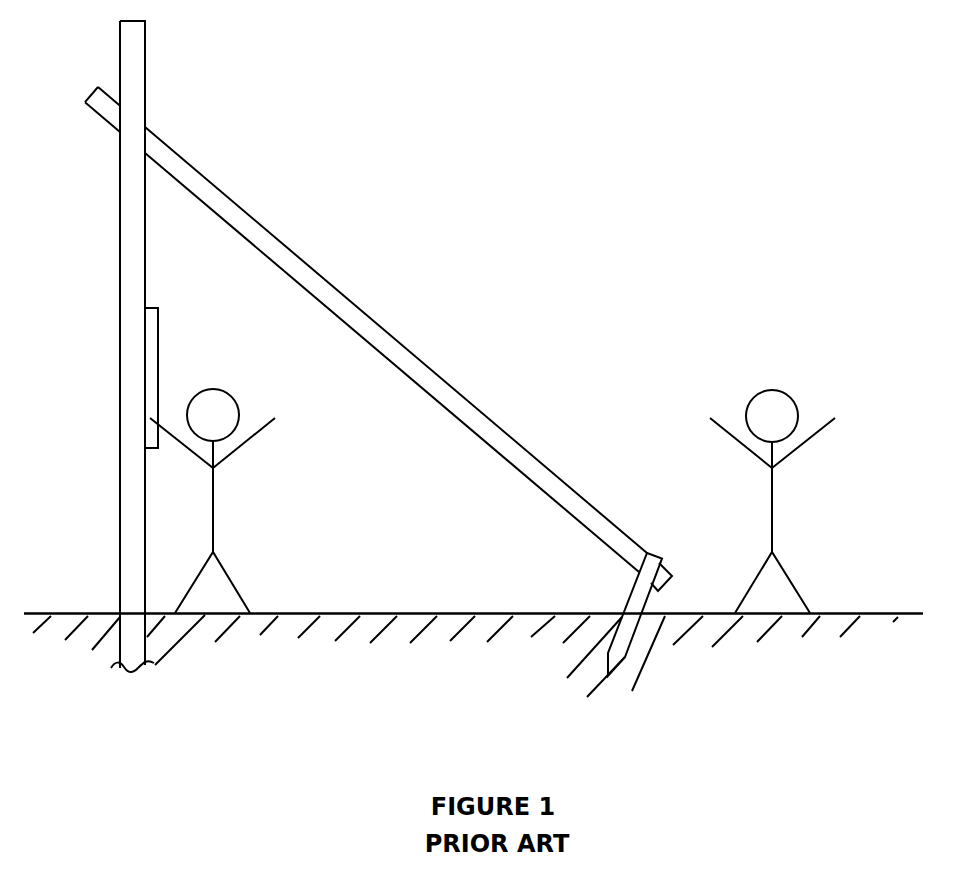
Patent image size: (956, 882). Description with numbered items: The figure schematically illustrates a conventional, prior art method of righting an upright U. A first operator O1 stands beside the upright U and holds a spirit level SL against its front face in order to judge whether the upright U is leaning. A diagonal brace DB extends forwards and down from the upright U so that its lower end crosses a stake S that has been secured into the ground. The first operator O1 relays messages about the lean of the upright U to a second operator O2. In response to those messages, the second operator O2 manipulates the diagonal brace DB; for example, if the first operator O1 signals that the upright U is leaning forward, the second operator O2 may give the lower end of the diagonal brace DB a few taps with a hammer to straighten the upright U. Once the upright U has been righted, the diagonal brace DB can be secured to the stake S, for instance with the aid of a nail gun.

The upright U is at (120, 252).
The spirit level SL is at (158, 360).
The diagonal brace DB is at (348, 323).
The stake S is at (630, 600).
The operator O1 is at (252, 498).
The second operator O2 is at (818, 493).